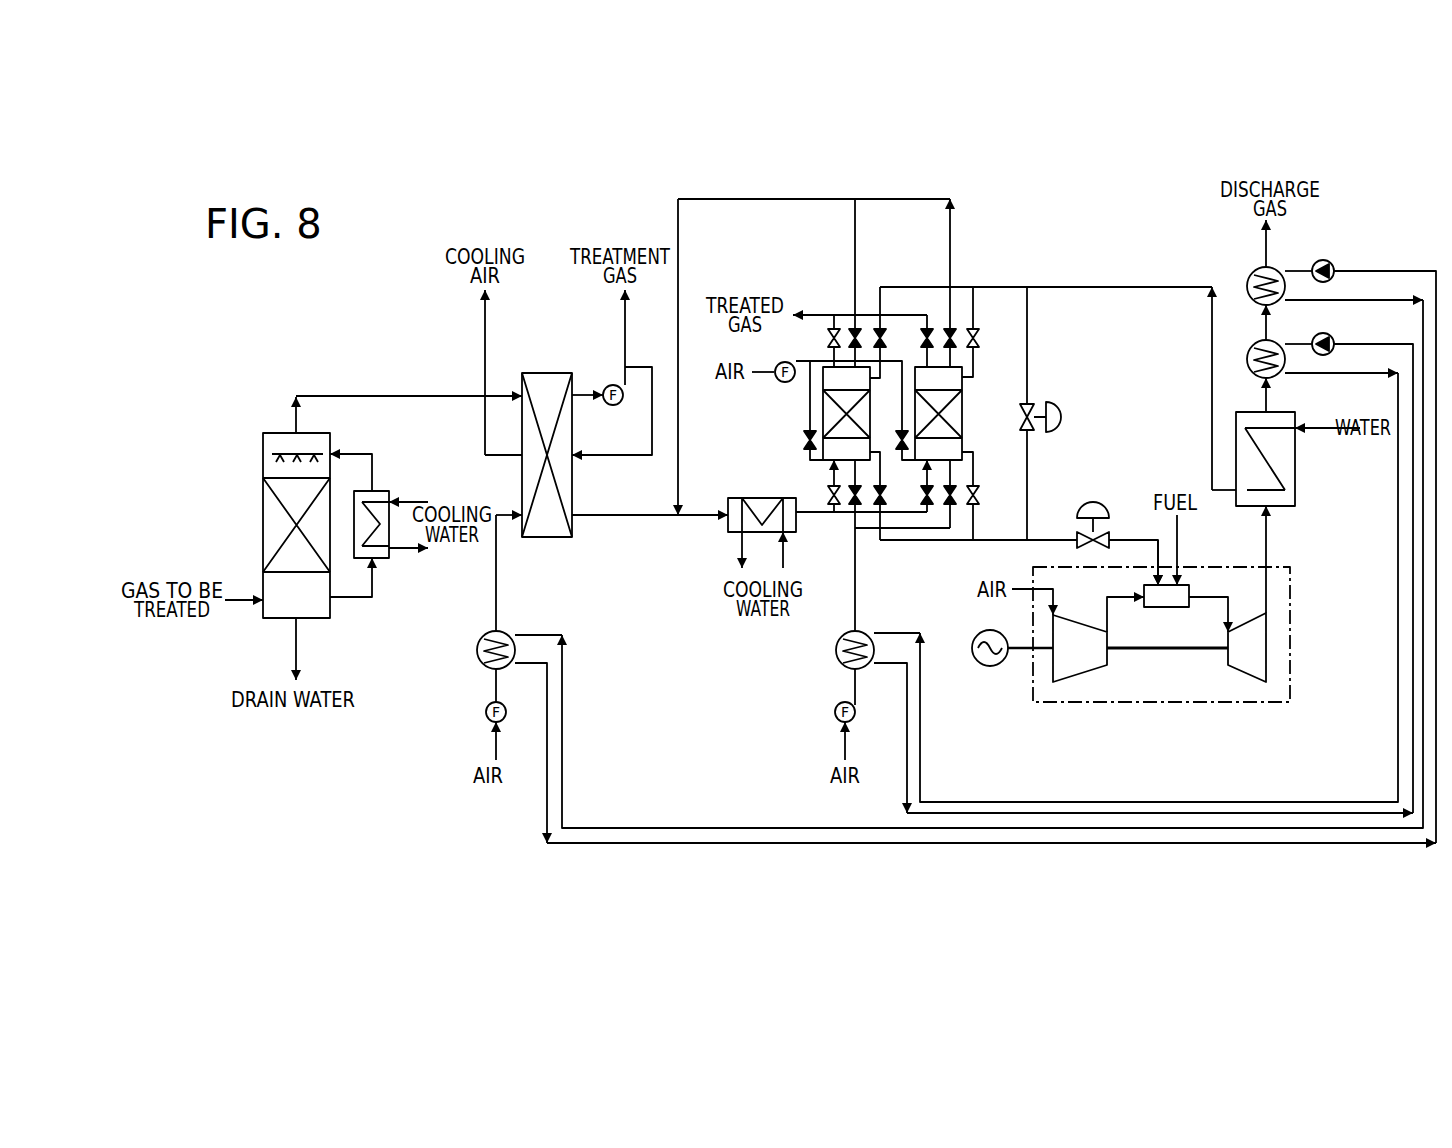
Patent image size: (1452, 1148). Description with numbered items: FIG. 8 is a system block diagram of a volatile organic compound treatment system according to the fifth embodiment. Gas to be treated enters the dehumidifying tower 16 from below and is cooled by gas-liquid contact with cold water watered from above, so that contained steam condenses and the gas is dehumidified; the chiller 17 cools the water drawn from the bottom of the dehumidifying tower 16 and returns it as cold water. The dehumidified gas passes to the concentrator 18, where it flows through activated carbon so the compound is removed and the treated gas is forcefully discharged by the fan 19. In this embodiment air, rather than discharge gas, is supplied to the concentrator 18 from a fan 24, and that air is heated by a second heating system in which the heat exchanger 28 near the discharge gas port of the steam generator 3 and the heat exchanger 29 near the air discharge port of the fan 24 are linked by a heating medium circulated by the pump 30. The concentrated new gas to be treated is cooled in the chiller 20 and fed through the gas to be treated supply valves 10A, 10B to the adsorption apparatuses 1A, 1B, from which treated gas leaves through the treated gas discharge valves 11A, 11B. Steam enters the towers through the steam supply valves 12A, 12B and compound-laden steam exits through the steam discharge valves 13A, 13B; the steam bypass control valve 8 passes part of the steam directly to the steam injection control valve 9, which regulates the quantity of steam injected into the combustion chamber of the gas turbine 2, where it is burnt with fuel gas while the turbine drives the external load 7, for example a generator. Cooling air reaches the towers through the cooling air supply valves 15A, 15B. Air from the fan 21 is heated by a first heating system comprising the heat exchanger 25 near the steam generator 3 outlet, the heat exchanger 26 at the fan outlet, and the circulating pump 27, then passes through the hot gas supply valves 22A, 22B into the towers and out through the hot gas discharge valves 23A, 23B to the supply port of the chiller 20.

The adsorption apparatus 1A is at (823, 410).
The adsorption apparatus 1B is at (962, 392).
The gas turbine 2 is at (1292, 625).
The steam generator 3 is at (1297, 475).
The external load 7 is at (992, 668).
The steam bypass control valve 8 is at (1066, 417).
The steam injection control valve 9 is at (1095, 500).
The gas to be treated supply valve 10A is at (830, 492).
The gas to be treated supply valve 10B is at (928, 508).
The treated gas discharge valve 11A is at (832, 330).
The treated gas discharge valve 11B is at (929, 330).
The steam supply valve 12A is at (858, 330).
The steam supply valve 12B is at (978, 336).
The steam discharge valve 13A is at (878, 505).
The steam discharge valve 13B is at (980, 496).
The cooling air supply valve 15A is at (805, 442).
The cooling air supply valve 15B is at (900, 446).
The dehumidifying tower 16 is at (263, 518).
The chiller 17 is at (383, 490).
The concentrator 18 is at (550, 537).
The fan 19 is at (612, 385).
The chiller 20 is at (734, 533).
The fan 21 is at (835, 712).
The hot gas supply valve 22A is at (851, 506).
The hot gas supply valve 22B is at (952, 490).
The hot gas discharge valve 23A is at (878, 330).
The hot gas discharge valve 23B is at (953, 332).
The fan 24 is at (486, 712).
The heat exchanger 25 is at (1250, 350).
The heat exchanger 26 is at (836, 655).
The pump 27 is at (1335, 342).
The heat exchanger 28 is at (1250, 276).
The heat exchanger 29 is at (478, 650).
The pump 30 is at (1335, 265).